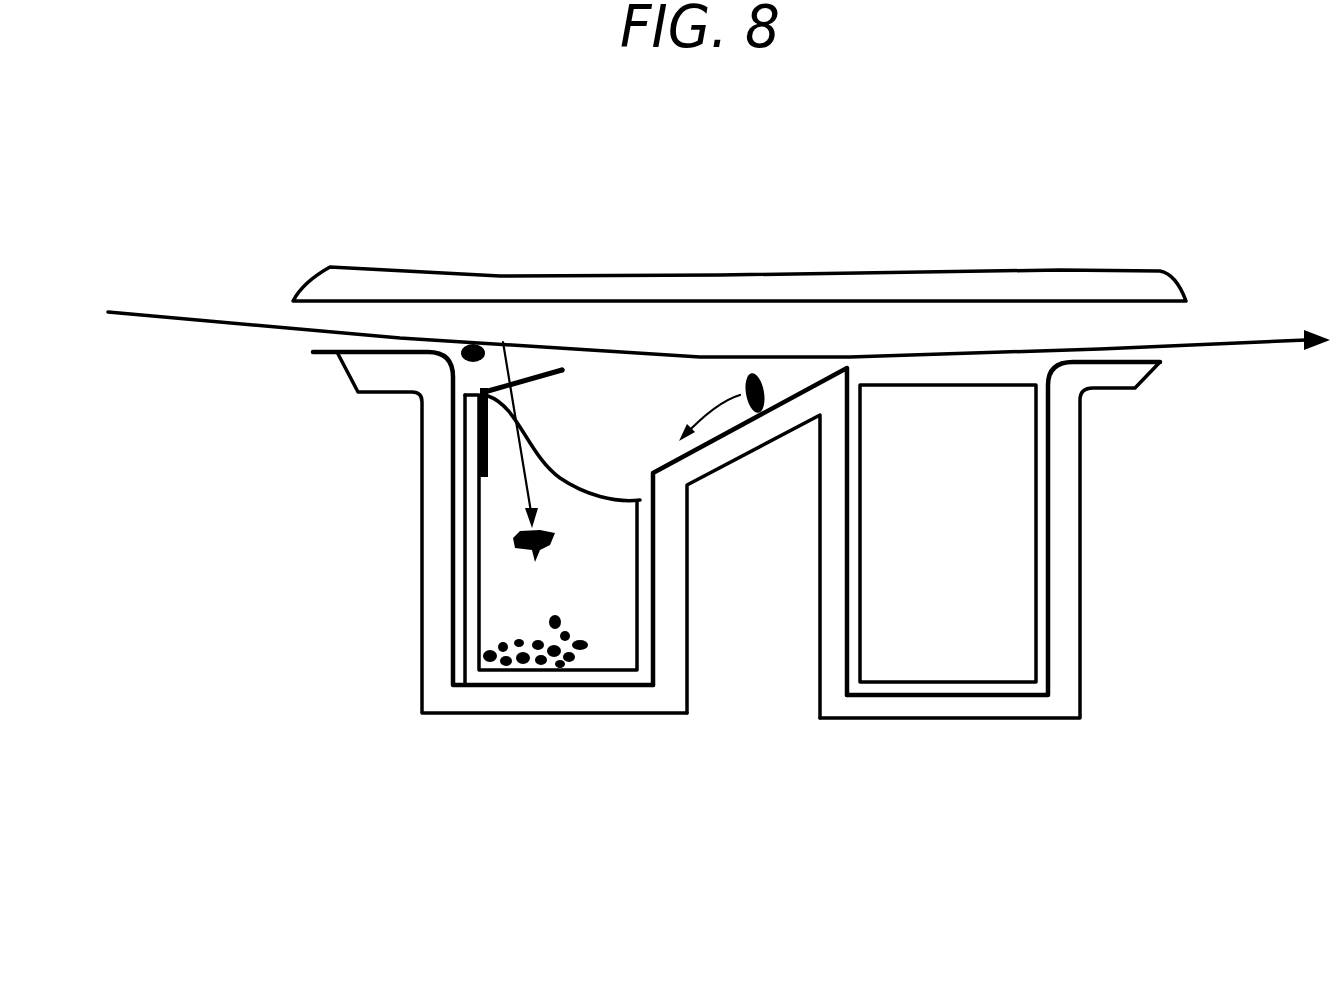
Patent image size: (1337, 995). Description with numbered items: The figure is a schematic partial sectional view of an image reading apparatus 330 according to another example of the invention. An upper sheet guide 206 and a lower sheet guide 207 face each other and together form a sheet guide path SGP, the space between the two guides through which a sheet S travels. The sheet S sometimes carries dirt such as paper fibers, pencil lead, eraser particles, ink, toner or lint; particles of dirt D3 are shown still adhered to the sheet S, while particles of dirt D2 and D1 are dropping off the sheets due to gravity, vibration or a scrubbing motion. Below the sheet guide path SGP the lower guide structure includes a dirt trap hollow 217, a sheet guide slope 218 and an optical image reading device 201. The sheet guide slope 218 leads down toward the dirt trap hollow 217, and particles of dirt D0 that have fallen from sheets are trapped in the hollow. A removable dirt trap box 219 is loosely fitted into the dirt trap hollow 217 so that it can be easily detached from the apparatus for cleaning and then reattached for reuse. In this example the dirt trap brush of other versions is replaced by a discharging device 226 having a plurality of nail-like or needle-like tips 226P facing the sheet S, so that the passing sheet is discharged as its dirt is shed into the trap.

The image reading apparatus 330 is at (838, 154).
The sheet guide path SGP is at (412, 318).
The particles of dirt adhered to the sheet D3 is at (473, 345).
The sheet guide slope 218 is at (797, 400).
The upper sheet guide 206 is at (942, 285).
The sheet S is at (203, 323).
The nail-like or needle-like tips 226P is at (610, 380).
The particles of dirt dropping off the sheets D2 is at (745, 388).
The discharging device 226 is at (528, 380).
The lower sheet guide 207 is at (1117, 375).
The optical image reading device 201 is at (1020, 482).
The removable dirt trap box 219 is at (477, 578).
The dirt trap hollow 217 is at (452, 663).
The particles of dirt dropping off the sheets D1 is at (535, 556).
The particles of dirt trapped in the dirt trap hollow D0 is at (587, 642).